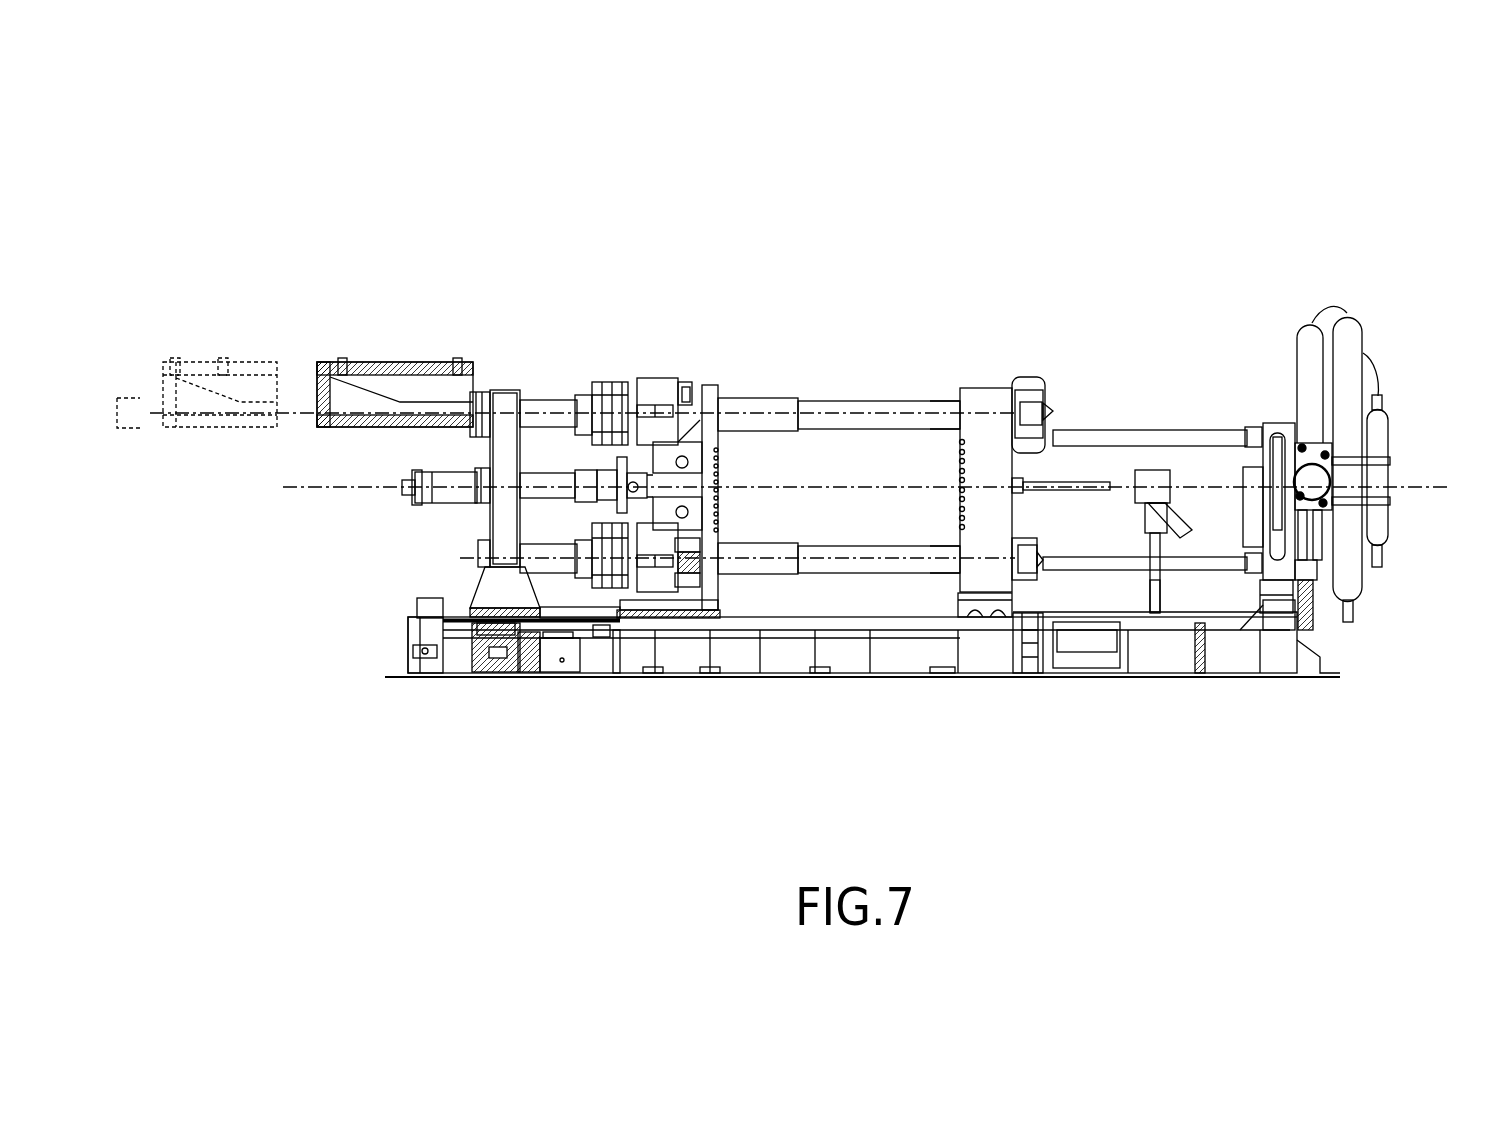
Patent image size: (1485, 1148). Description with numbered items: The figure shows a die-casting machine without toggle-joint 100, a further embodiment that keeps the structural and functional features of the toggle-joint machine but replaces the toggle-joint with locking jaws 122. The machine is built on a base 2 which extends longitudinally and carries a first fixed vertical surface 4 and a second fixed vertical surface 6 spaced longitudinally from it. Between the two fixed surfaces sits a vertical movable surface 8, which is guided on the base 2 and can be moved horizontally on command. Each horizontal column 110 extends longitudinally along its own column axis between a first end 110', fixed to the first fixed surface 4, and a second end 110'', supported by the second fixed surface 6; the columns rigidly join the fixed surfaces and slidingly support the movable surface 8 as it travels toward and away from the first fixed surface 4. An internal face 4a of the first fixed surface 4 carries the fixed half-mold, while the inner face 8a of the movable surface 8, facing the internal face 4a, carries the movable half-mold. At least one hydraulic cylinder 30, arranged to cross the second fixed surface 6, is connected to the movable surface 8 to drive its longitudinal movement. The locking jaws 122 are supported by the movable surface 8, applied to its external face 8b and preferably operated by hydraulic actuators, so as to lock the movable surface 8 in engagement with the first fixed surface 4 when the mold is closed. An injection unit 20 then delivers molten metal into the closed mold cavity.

The die-casting machine without toggle-joint 100 is at (1273, 160).
The base 2 is at (910, 648).
The first fixed vertical surface 4 is at (992, 405).
The internal face of the first fixed surface 4a is at (957, 458).
The second fixed vertical surface 6 is at (505, 428).
The movable surface 8 is at (710, 393).
The inner face of the movable surface 8a is at (725, 513).
The external face of the movable surface 8b is at (690, 412).
The injection unit 20 is at (1403, 337).
The hydraulic cylinder 30 is at (563, 503).
The horizontal column 110 is at (839, 535).
The first end of the horizontal column 110' is at (974, 397).
The second end of the horizontal column 110'' is at (505, 381).
The locking jaws 122 is at (652, 390).